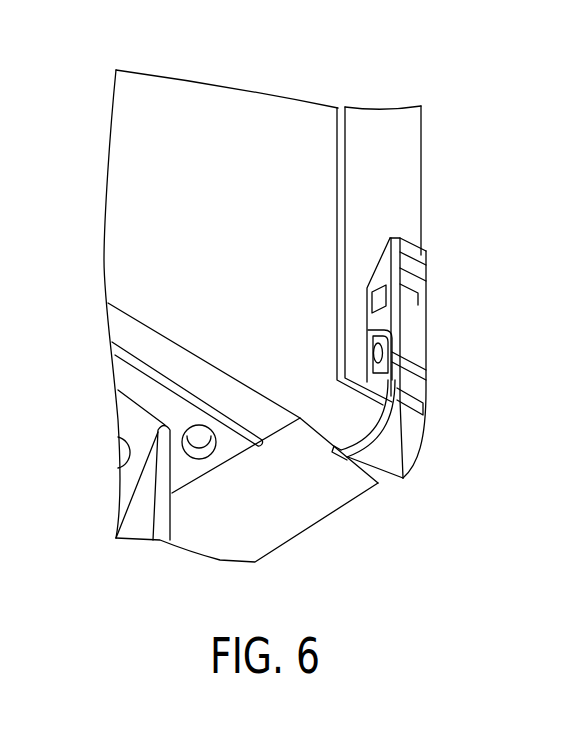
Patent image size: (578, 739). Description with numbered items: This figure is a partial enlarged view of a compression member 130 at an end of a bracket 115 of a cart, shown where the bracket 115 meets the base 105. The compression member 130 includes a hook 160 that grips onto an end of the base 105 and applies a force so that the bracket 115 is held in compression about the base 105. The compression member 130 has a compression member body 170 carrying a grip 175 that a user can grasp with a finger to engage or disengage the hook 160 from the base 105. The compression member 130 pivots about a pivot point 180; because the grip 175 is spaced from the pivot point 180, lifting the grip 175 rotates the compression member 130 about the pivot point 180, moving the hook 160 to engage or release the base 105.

The base 105 is at (227, 537).
The bracket 115 is at (470, 403).
The compression member 130 is at (427, 343).
The hook 160 is at (377, 483).
The compression member body 170 is at (418, 328).
The grip 175 is at (383, 262).
The pivot point 180 is at (368, 330).